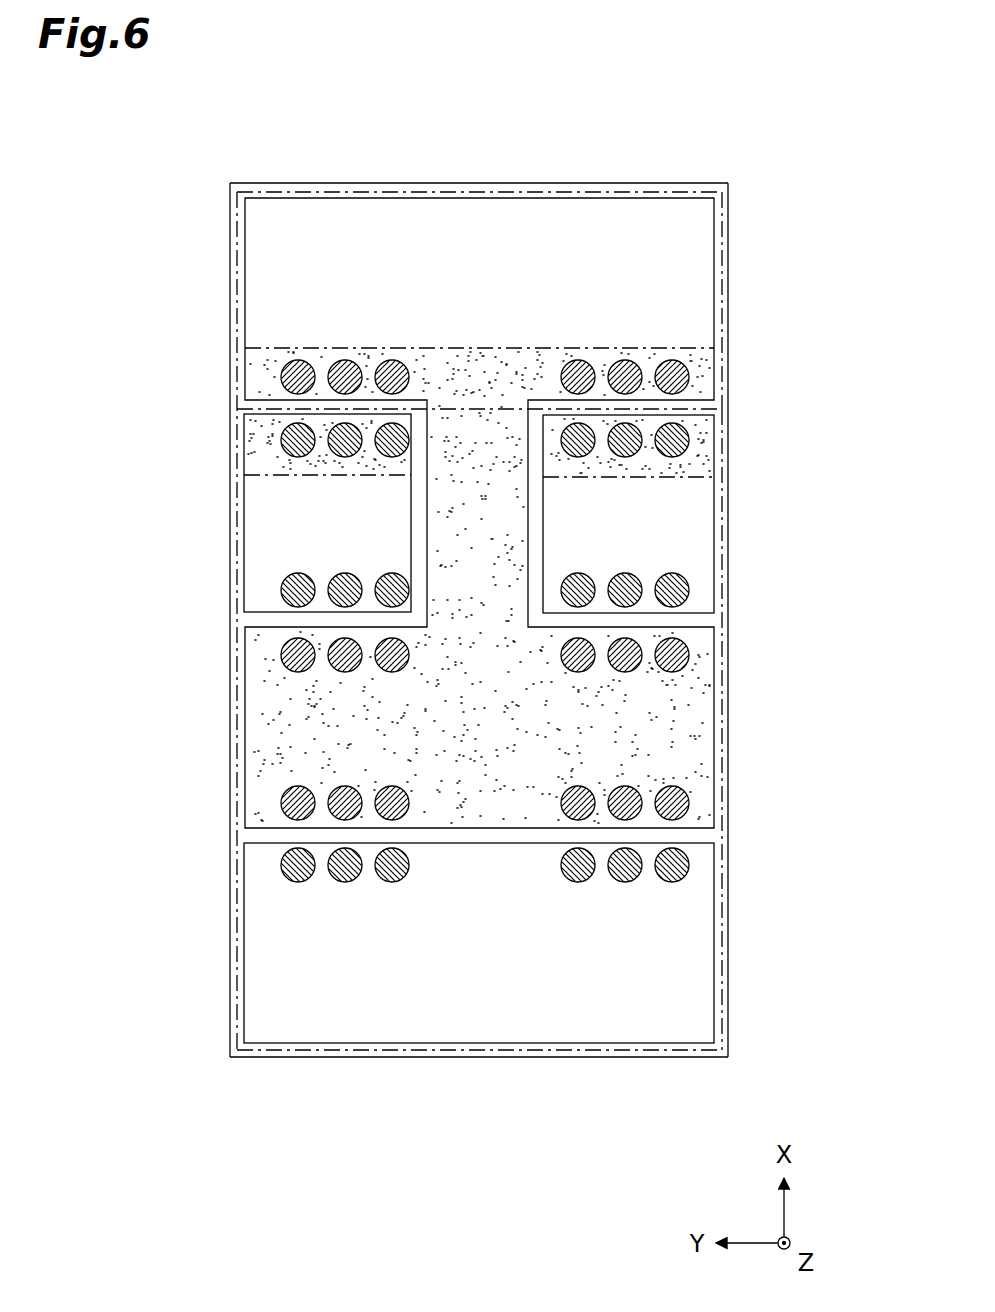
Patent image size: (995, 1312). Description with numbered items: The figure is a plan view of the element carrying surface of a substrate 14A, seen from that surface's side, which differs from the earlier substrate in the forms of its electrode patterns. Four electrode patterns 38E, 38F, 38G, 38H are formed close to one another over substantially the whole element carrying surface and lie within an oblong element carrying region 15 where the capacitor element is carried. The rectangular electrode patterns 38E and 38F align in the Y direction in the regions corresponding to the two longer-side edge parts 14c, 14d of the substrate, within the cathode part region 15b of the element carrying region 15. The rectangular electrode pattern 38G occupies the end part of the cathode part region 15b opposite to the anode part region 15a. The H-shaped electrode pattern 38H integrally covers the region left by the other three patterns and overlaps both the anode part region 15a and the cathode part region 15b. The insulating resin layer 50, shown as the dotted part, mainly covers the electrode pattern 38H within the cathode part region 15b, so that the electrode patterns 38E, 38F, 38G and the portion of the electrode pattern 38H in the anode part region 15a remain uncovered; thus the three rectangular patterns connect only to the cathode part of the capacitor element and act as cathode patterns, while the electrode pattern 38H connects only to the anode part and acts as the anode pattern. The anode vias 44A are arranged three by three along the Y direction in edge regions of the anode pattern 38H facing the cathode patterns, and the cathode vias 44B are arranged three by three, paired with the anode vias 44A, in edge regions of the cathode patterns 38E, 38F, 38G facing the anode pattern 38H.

The substrate 14A is at (774, 197).
The longer-side edge part 14c is at (728, 993).
The longer-side edge part 14d is at (229, 943).
The element carrying region 15 is at (730, 602).
The anode part region 15a is at (725, 313).
The cathode part region 15b is at (723, 780).
The electrode pattern 38H is at (245, 289).
The electrode pattern 38F is at (245, 540).
The electrode pattern 38E is at (714, 552).
The electrode pattern 38G is at (713, 915).
The anode via 44A is at (671, 360).
The cathode via 44B is at (392, 458).
The insulating resin layer 50 is at (246, 449).